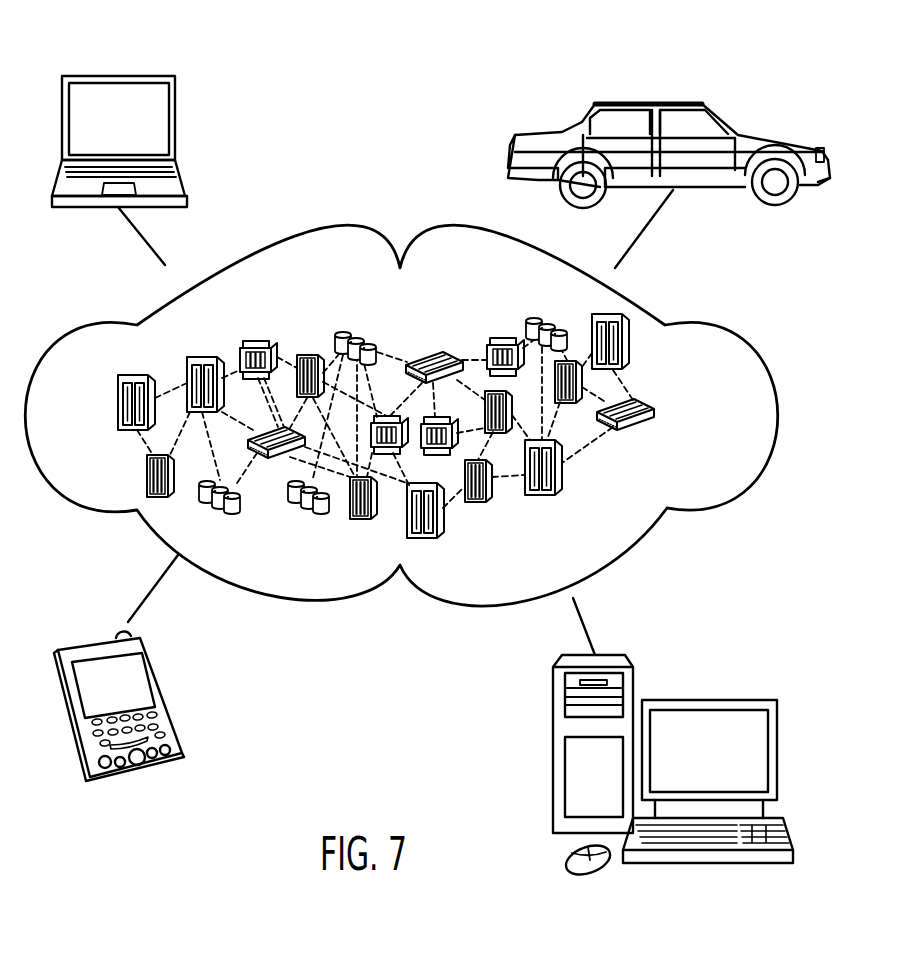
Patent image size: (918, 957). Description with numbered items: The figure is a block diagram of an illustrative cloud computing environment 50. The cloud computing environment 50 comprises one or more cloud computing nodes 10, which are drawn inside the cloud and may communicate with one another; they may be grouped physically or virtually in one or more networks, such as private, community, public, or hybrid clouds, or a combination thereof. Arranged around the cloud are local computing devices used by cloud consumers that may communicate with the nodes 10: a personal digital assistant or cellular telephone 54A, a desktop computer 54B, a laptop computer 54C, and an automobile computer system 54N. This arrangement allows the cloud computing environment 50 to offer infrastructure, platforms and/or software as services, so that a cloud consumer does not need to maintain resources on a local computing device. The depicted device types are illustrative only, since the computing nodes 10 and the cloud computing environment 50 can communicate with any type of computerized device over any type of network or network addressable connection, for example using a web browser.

The laptop computer 54C is at (118, 75).
The automobile computer system 54N is at (647, 100).
The cloud computing environment 50 is at (722, 328).
The cloud computing node 10 is at (660, 417).
The personal digital assistant (PDA) or cellular telephone 54A is at (100, 640).
The desktop computer 54B is at (708, 700).